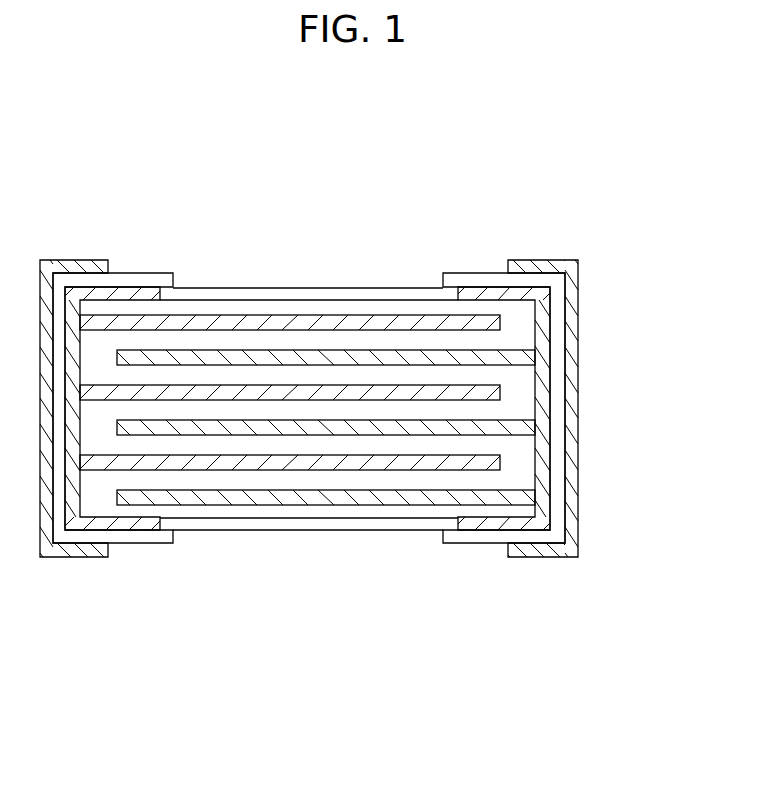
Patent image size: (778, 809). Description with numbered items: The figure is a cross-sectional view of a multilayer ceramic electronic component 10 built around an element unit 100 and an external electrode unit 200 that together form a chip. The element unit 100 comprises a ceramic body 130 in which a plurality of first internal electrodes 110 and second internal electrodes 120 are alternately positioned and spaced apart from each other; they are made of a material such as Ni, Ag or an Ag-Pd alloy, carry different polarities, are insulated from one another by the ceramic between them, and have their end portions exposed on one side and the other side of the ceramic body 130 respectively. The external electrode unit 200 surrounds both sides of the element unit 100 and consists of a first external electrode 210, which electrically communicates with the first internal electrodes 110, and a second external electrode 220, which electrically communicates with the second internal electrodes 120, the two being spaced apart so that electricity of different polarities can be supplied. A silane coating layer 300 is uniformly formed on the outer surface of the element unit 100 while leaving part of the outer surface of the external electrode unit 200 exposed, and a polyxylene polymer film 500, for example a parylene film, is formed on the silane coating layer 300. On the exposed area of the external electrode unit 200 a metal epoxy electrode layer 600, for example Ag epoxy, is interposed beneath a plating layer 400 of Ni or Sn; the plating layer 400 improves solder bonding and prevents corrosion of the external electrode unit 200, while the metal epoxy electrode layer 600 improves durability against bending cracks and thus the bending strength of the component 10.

The multilayer ceramic electronic component 10 is at (58, 127).
The element unit 100 is at (307, 329).
The first internal electrodes 110 is at (212, 320).
The second internal electrodes 120 is at (297, 353).
The ceramic body 130 is at (217, 173).
The external electrode unit 200 is at (307, 485).
The first external electrode 210 is at (125, 538).
The second external electrode 220 is at (470, 522).
The silane coating layer 300 is at (475, 540).
The plating layer 400 is at (565, 548).
The polyxylene polymer film 500 is at (465, 556).
The metal epoxy electrode layer 600 is at (528, 540).